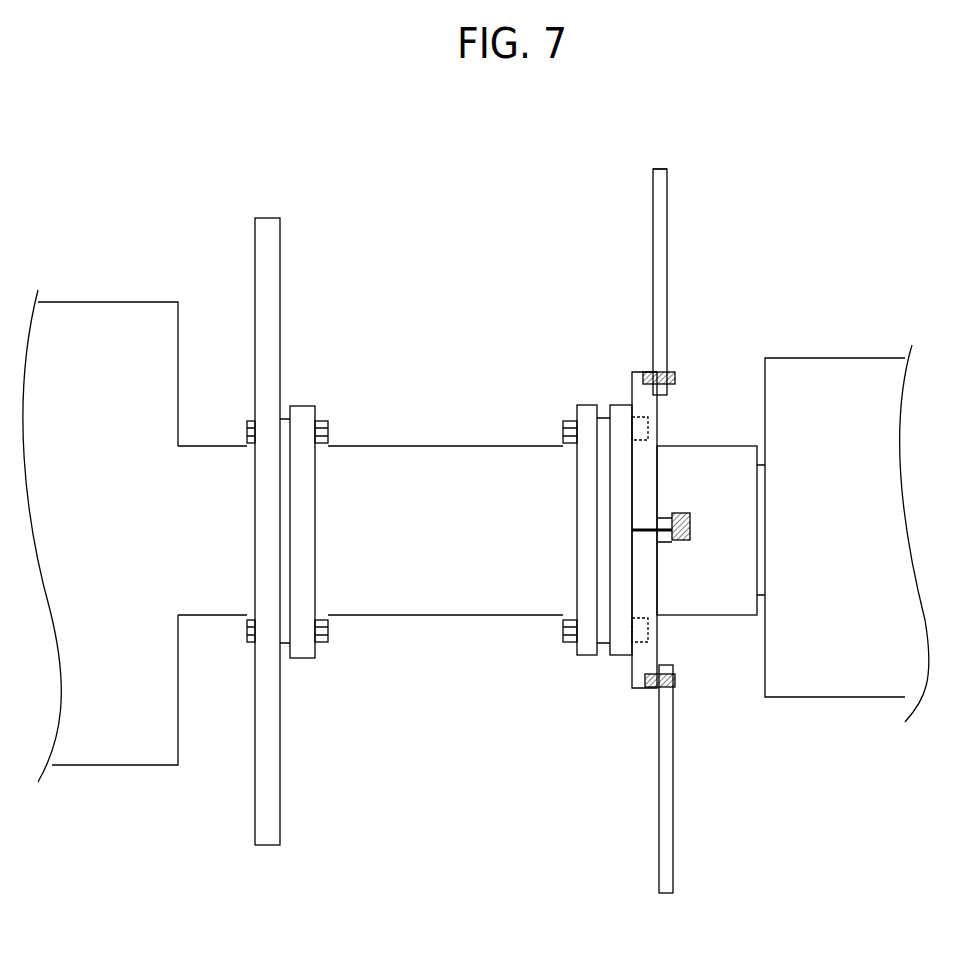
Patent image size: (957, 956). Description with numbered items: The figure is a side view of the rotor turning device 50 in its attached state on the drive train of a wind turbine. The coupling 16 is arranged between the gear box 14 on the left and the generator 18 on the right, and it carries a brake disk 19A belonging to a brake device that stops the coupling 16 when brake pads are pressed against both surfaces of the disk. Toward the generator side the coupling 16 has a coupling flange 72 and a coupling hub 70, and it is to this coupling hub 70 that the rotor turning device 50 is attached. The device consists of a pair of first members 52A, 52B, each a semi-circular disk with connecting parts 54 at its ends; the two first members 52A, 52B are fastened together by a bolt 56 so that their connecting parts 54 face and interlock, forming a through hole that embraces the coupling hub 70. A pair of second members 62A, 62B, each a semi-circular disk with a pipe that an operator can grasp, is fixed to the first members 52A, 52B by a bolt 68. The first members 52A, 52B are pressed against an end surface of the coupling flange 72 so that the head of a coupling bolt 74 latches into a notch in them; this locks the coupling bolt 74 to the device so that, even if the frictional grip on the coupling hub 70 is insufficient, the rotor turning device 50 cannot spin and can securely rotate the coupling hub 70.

The gear box 14 is at (105, 302).
The coupling 16 is at (452, 378).
The generator 18 is at (822, 358).
The brake disk 19A is at (280, 230).
The rotor turning device 50 is at (703, 205).
The first member 52A is at (632, 370).
The first member 52B is at (632, 688).
The connecting part 54 is at (692, 527).
The bolt 56 is at (682, 512).
The second member 62A is at (672, 268).
The second member 62B is at (673, 835).
The bolt 68 is at (672, 374).
The coupling hub 70 is at (740, 617).
The coupling flange 72 is at (582, 655).
The coupling bolt 74 is at (655, 428).